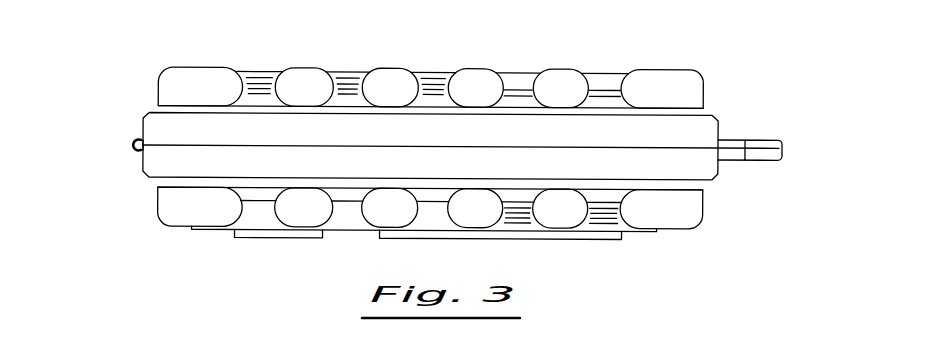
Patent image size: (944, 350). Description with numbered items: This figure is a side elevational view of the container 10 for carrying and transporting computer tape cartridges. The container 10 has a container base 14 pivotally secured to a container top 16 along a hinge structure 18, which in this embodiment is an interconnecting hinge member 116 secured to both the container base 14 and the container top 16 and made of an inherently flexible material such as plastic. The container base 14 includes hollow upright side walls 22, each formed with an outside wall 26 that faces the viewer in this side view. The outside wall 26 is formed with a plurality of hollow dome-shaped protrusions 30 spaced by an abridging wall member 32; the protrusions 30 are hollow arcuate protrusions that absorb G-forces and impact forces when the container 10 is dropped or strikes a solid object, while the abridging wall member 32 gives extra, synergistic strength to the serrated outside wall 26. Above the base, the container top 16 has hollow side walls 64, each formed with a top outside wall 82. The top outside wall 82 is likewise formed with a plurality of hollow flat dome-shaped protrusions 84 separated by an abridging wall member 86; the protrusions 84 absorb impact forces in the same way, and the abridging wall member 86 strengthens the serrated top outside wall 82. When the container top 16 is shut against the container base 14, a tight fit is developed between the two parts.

The container 10 is at (727, 68).
The container base 14 is at (697, 167).
The container top 16 is at (703, 131).
The hinge structure 18 is at (130, 150).
The side wall 22 is at (160, 219).
The outside wall 26 is at (174, 203).
The hollow dome-shaped protrusion 30 is at (312, 206).
The abridging wall member 32 is at (260, 213).
The hollow side wall 64 is at (672, 83).
The top outside wall 82 is at (174, 88).
The hollow flat dome-shaped protrusion 84 is at (295, 87).
The abridging wall member 86 is at (342, 78).
The hinge member 116 is at (135, 141).